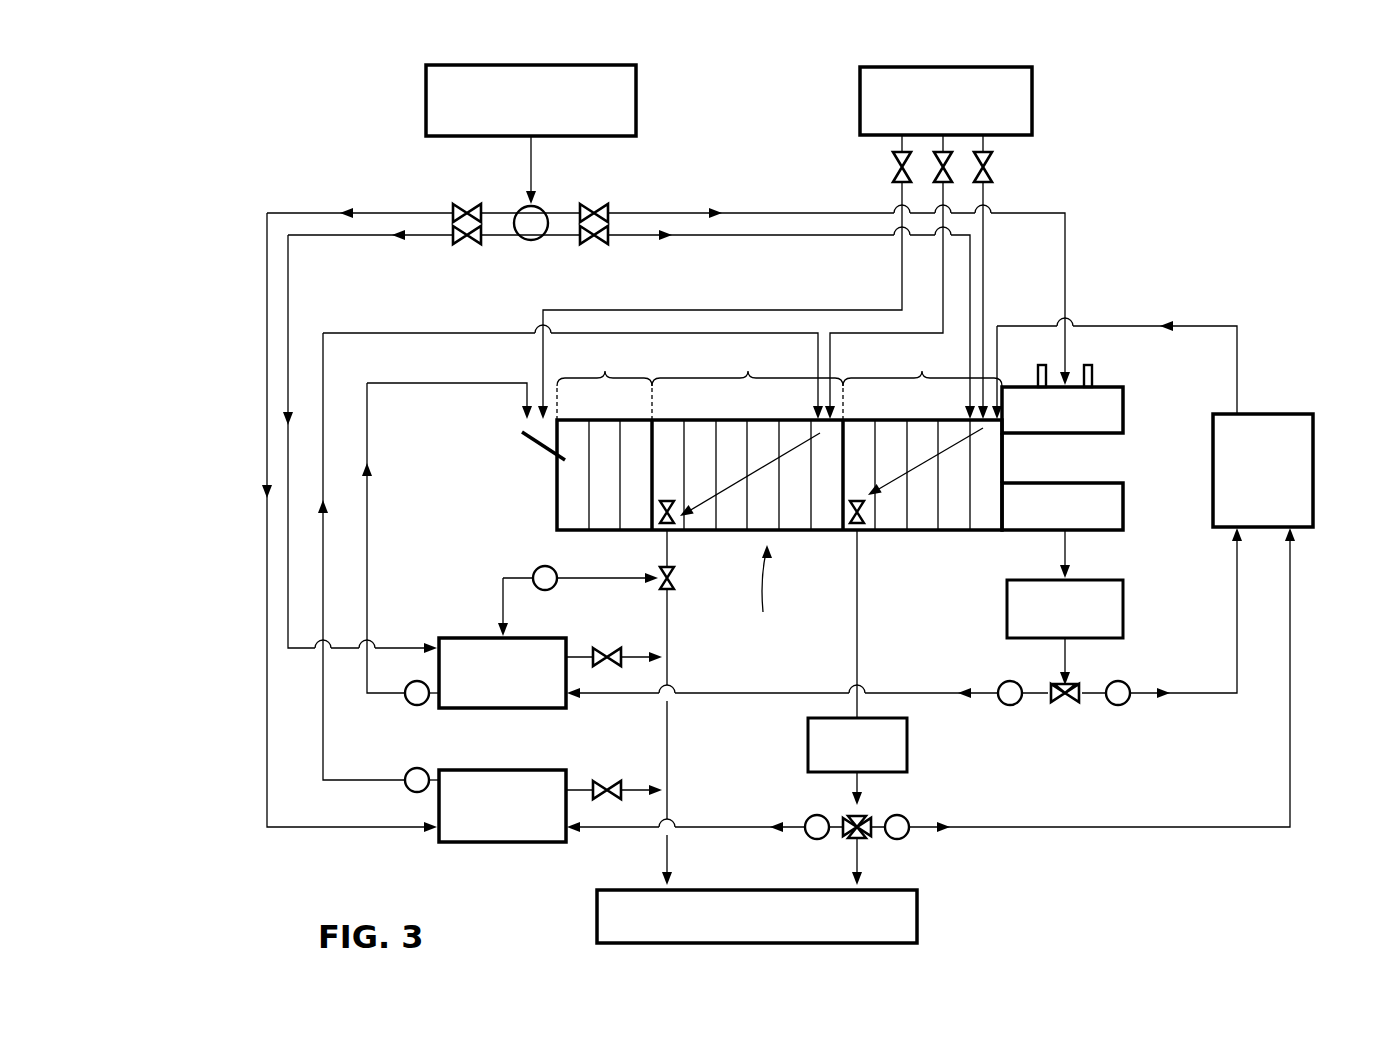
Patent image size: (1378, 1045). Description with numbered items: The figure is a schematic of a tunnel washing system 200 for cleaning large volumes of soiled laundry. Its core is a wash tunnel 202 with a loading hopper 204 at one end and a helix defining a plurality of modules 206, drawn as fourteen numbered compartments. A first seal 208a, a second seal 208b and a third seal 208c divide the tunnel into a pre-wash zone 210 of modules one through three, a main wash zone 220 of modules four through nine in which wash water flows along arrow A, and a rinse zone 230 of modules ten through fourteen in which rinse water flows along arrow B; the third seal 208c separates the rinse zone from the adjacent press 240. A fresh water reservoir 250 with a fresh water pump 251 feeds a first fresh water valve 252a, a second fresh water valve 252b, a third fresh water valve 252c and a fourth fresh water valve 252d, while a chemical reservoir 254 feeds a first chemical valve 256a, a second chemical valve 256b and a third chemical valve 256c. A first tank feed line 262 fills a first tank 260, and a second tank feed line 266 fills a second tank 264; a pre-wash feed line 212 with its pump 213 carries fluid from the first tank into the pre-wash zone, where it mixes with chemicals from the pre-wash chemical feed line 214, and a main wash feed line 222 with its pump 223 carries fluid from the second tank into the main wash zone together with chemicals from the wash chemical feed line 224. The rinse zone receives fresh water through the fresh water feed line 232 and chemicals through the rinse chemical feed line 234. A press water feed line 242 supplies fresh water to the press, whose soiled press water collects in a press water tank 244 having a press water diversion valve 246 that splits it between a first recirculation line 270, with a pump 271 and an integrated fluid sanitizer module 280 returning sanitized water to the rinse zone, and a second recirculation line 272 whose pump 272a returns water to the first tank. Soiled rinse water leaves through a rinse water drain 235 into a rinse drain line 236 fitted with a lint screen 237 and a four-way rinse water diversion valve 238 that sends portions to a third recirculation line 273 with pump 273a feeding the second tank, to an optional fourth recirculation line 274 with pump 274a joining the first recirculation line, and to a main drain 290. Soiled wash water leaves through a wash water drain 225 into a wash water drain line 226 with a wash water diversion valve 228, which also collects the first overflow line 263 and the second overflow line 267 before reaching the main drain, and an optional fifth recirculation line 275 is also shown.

The tunnel washing system 200 is at (255, 90).
The wash tunnel 202 is at (556, 498).
The loading hopper 204 is at (522, 436).
The plurality of modules 206 is at (769, 594).
The first seal 208a is at (658, 418).
The second seal 208b is at (848, 418).
The third seal 208c is at (1002, 486).
The pre-wash zone 210 is at (604, 379).
The pre-wash feed line 212 is at (410, 385).
The pump 213 is at (410, 703).
The pre-wash chemical feed line 214 is at (770, 306).
The main wash zone 220 is at (747, 379).
The main wash feed line 222 is at (455, 335).
The pump 223 is at (410, 790).
The wash chemical feed line 224 is at (900, 278).
The wash water drain 225 is at (676, 526).
The wash water drain line 226 is at (666, 712).
The wash water diversion valve 228 is at (676, 592).
The rinse zone 230 is at (922, 379).
The fresh water feed line 232 is at (968, 262).
The rinse chemical feed line 234 is at (990, 250).
The rinse water drain 235 is at (866, 522).
The rinse drain line 236 is at (858, 612).
The lint screen 237 is at (908, 730).
The rinse water diversion valve 238 is at (866, 838).
The press 240 is at (1108, 376).
The press water feed line 242 is at (1067, 262).
The press water tank 244 is at (1107, 578).
The press water diversion valve 246 is at (1066, 704).
The fresh water reservoir 250 is at (431, 64).
The fresh water pump 251 is at (521, 238).
The first fresh water valve 252a is at (462, 246).
The second fresh water valve 252b is at (462, 203).
The third fresh water valve 252c is at (600, 246).
The fourth fresh water valve 252d is at (600, 203).
The chemical reservoir 254 is at (866, 66).
The first chemical valve 256a is at (893, 165).
The second chemical valve 256b is at (935, 180).
The third chemical valve 256c is at (990, 165).
The first tank 260 is at (480, 637).
The first tank feed line 262 is at (286, 606).
The first overflow line 263 is at (620, 650).
The second tank 264 is at (480, 769).
The second tank feed line 266 is at (265, 705).
The second overflow line 267 is at (620, 783).
The first recirculation line 270 is at (1238, 340).
The pump 271 is at (1117, 706).
The second recirculation line 272 is at (775, 690).
The pump 272a is at (1007, 706).
The third recirculation line 273 is at (717, 825).
The pump 273a is at (808, 818).
The fourth recirculation line 274 is at (1128, 828).
The pump 274a is at (906, 816).
The fifth recirculation line 275 is at (580, 572).
The integrated fluid sanitizer module 280 is at (1285, 413).
The main drain 290 is at (596, 902).